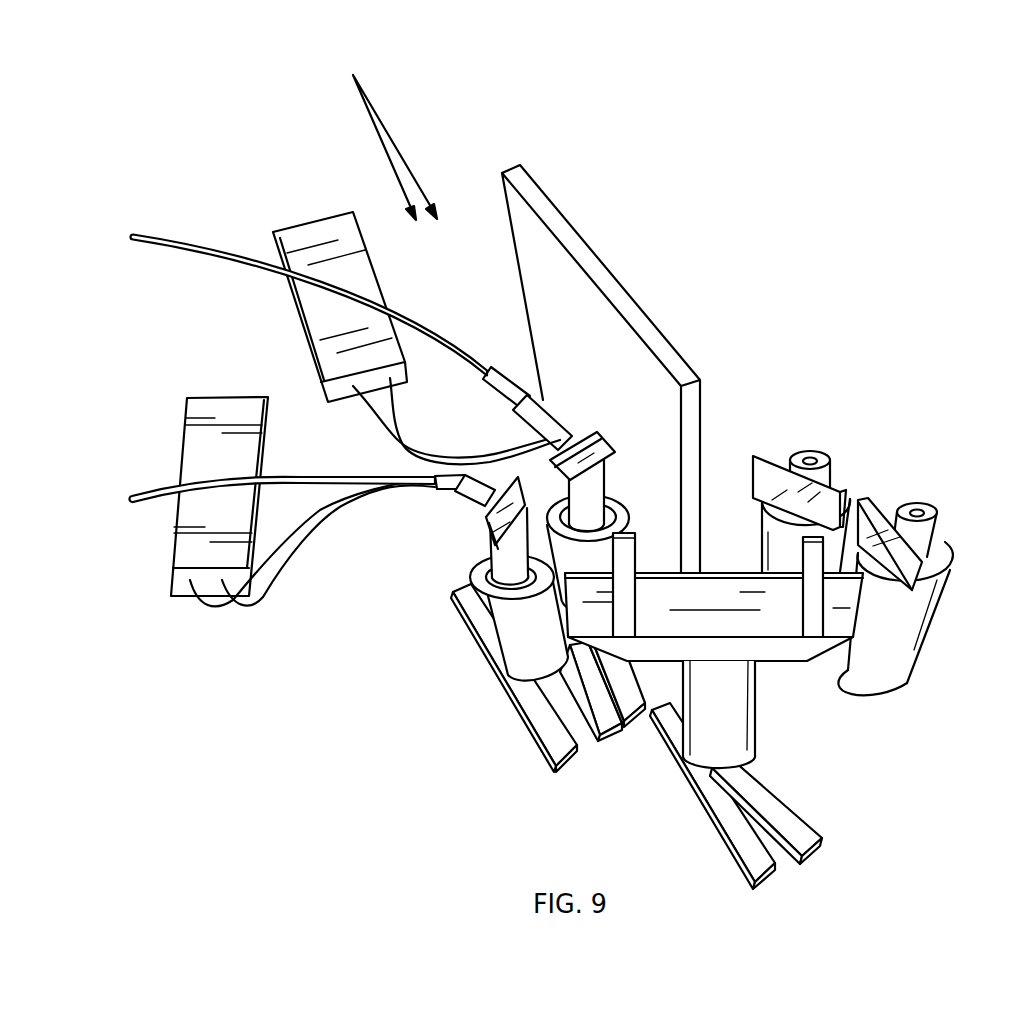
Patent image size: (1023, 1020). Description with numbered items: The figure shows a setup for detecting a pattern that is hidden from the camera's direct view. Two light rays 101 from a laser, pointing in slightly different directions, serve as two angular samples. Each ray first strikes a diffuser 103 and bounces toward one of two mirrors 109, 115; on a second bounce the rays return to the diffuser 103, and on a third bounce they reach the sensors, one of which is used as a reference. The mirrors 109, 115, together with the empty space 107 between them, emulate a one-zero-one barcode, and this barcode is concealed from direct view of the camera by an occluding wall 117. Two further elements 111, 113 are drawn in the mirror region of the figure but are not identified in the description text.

The light rays 101 is at (378, 55).
The diffuser 103 is at (745, 622).
The empty space 107 is at (878, 563).
The mirror 109 is at (813, 503).
The mirror 111 is at (488, 522).
The mirror 113 is at (597, 444).
The mirror 115 is at (907, 563).
The occluding wall 117 is at (588, 260).